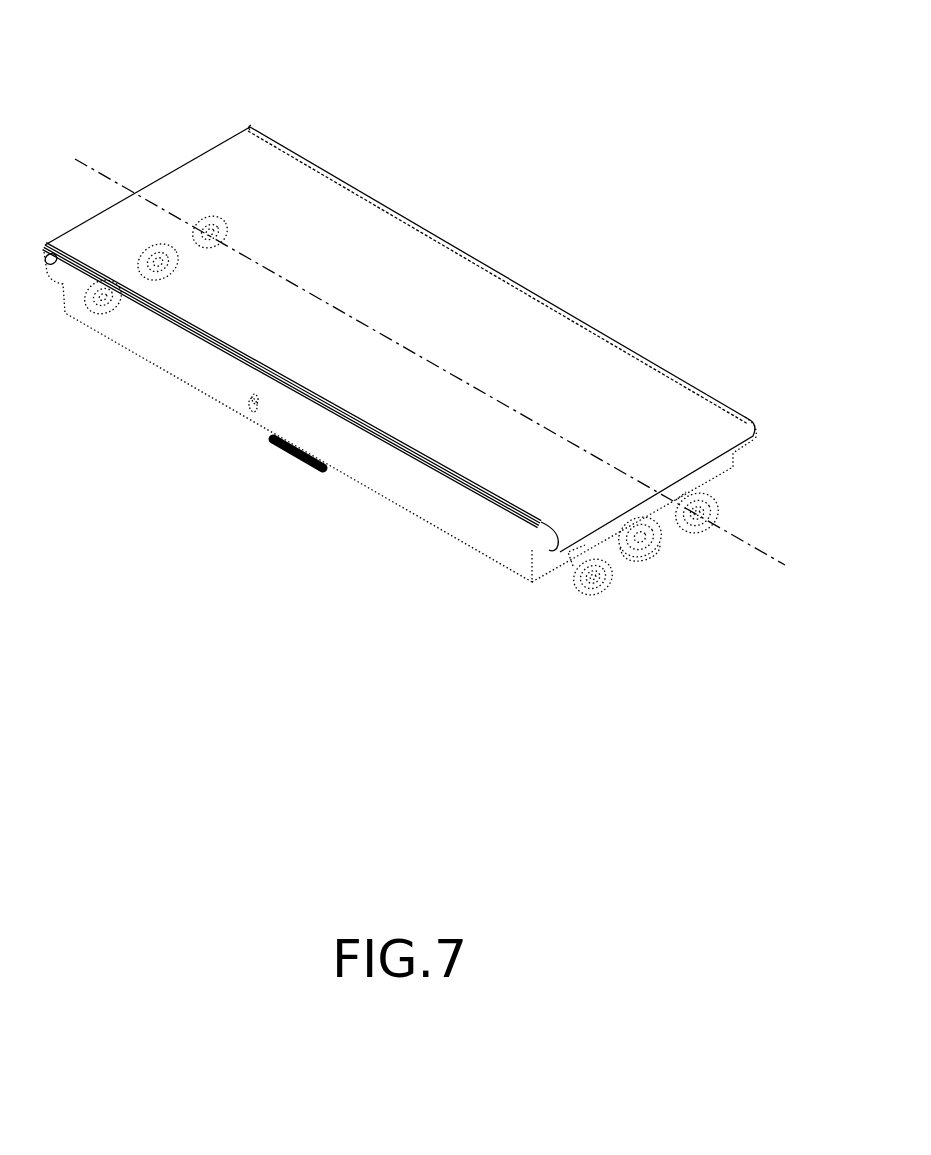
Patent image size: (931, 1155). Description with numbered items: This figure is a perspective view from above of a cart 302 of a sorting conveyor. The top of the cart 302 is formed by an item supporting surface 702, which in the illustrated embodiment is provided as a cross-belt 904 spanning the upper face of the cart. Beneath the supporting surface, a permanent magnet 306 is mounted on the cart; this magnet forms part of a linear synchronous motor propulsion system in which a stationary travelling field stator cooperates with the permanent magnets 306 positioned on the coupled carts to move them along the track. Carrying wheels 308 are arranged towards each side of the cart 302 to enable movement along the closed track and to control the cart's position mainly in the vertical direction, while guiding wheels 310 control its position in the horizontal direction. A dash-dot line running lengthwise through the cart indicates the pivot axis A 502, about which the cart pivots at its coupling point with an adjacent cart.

The cart 302 is at (400, 356).
The permanent magnet 306 is at (305, 467).
The carrying wheel 308 is at (595, 598).
The guiding wheel 310 is at (657, 560).
The pivot axis A 502 is at (89, 169).
The item supporting surface 702 is at (442, 257).
The cross-belt 904 is at (750, 417).